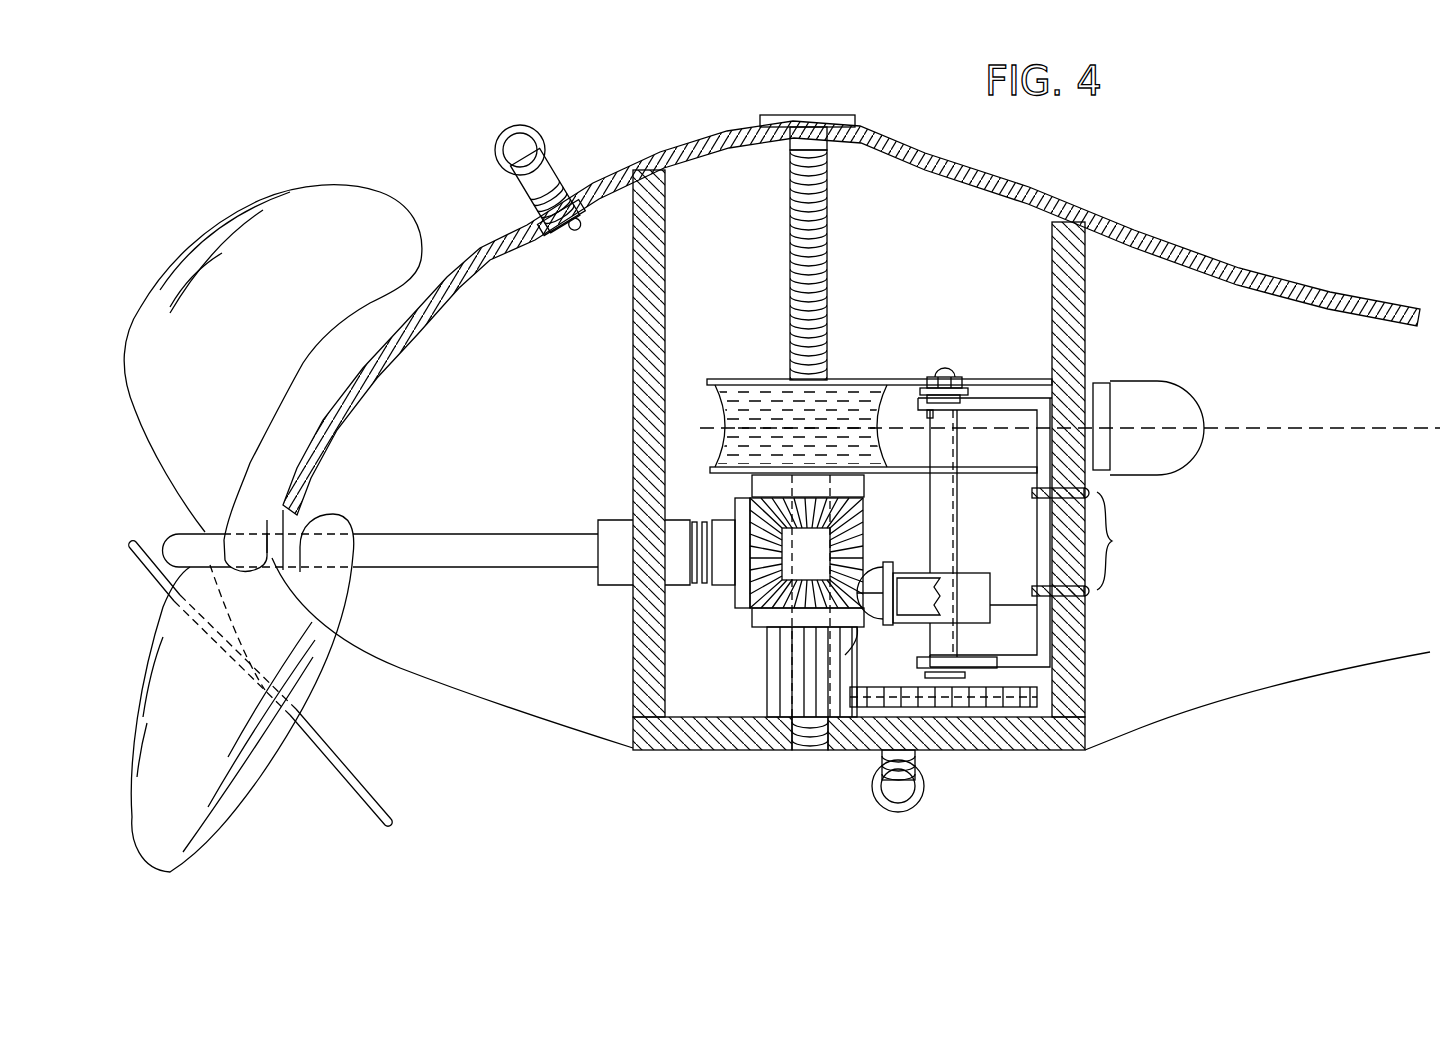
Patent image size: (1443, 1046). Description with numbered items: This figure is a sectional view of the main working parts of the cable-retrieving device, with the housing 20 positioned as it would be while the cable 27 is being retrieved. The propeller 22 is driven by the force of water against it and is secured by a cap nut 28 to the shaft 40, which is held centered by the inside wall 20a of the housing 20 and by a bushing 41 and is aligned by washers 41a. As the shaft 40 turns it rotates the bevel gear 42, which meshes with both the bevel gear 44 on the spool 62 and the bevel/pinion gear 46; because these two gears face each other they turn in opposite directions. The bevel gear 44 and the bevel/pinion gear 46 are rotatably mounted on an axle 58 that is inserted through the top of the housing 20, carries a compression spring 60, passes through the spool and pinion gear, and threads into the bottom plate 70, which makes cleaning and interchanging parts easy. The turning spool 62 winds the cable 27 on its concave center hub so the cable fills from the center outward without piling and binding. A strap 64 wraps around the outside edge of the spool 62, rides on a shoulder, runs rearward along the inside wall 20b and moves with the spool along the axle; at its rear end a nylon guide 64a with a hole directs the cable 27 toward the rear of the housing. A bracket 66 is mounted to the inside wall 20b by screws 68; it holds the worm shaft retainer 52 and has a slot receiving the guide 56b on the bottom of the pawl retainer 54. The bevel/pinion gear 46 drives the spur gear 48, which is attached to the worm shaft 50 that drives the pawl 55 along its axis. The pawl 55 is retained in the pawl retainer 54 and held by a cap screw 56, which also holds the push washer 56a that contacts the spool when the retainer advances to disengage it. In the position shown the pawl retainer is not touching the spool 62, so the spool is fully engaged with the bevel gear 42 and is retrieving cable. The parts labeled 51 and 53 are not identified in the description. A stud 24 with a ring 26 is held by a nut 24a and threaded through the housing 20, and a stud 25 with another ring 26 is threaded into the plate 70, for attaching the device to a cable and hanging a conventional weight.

The housing 20 is at (1210, 262).
The inside wall 20a is at (633, 640).
The inside wall 20b is at (1085, 720).
The propeller 22 is at (130, 301).
The stud 24 is at (550, 180).
The nut 24a is at (556, 243).
The stud 25 is at (920, 755).
The ring 26 is at (925, 790).
The cable 27 is at (1325, 425).
The cap nut 28 is at (175, 535).
The shaft 40 is at (500, 533).
The bushing 41 is at (602, 585).
The washers 41a is at (700, 520).
The bevel gear 42 is at (735, 600).
The bevel gear 44 is at (865, 515).
The bevel/pinion gear 46 is at (767, 655).
The spur gear 48 is at (862, 687).
The worm shaft 50 is at (940, 535).
The retaining nut 51 is at (956, 371).
The worm shaft retainer 52 is at (958, 515).
The bolt head 53 is at (938, 372).
The pawl retainer 54 is at (990, 585).
The pawl 55 is at (929, 609).
The cap screw 56 is at (880, 585).
The push washer 56a is at (845, 655).
The guide 56b is at (995, 612).
The axle 58 is at (858, 122).
The compression spring 60 is at (828, 301).
The spool 62 is at (745, 380).
The strap 64 is at (1001, 386).
The nylon guide 64a is at (1175, 470).
The bracket 66 is at (1040, 492).
The screws 68 is at (1122, 541).
The plate 70 is at (1045, 755).